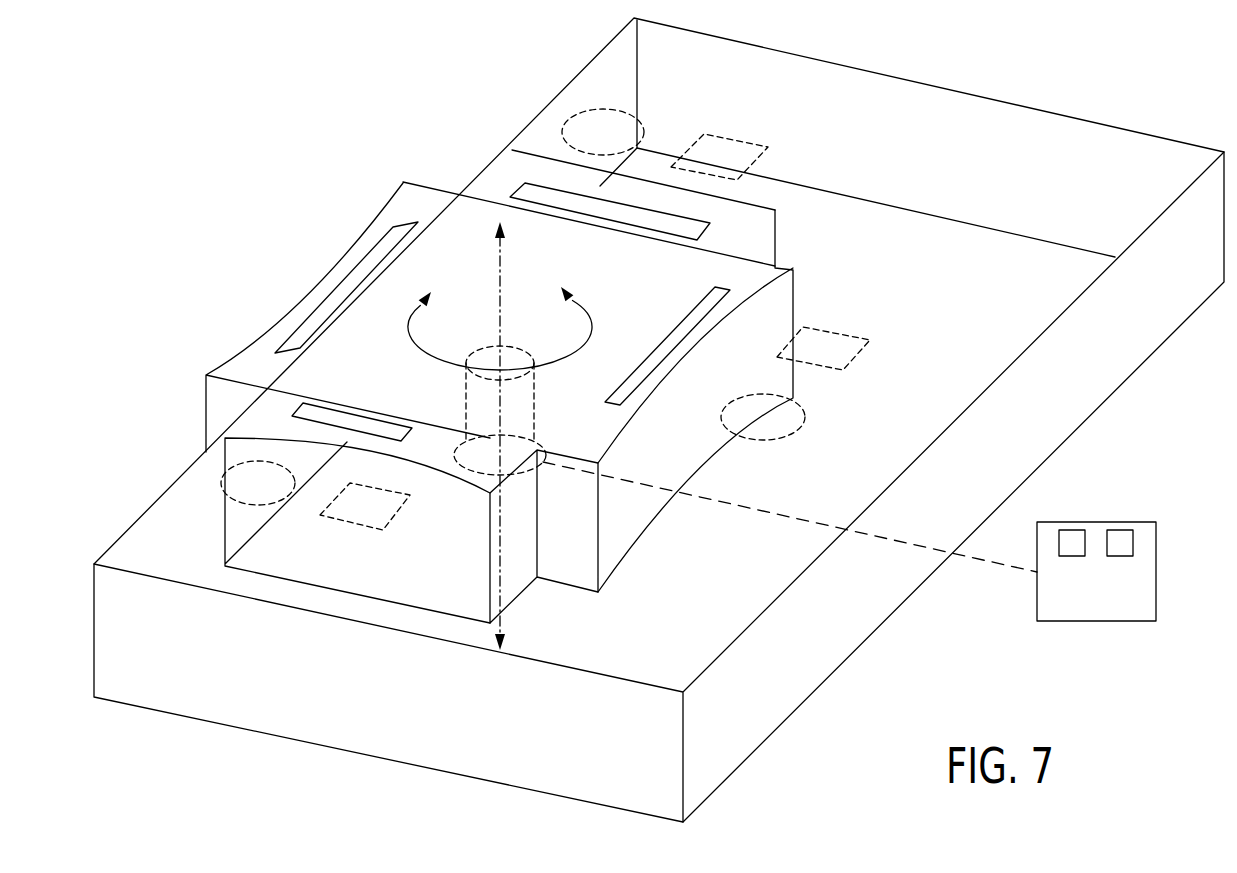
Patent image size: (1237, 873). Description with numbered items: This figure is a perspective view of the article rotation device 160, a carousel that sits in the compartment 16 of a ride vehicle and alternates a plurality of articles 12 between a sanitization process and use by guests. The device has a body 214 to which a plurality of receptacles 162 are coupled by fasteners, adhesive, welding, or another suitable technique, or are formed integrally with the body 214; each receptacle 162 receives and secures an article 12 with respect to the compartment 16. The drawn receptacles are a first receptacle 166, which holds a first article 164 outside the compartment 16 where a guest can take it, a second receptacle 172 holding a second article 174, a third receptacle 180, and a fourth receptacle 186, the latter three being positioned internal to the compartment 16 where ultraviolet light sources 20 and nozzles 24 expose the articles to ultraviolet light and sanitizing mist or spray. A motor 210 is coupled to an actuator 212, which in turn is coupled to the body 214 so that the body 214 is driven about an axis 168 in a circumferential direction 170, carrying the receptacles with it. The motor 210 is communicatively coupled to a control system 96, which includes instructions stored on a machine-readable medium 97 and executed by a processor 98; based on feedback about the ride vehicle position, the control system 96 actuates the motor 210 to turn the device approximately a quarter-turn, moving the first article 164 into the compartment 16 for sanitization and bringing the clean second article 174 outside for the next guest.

The article 12 is at (373, 248).
The compartment 16 is at (932, 84).
The ultraviolet light source 20 is at (222, 482).
The nozzle 24 is at (357, 523).
The control system 96 is at (886, 544).
The machine-readable medium 97 is at (1120, 528).
The processor 98 is at (1073, 528).
The article rotation device 160 is at (472, 135).
The receptacle 162 is at (397, 202).
The first article 164 is at (335, 283).
The first receptacle 166 is at (247, 363).
The axis 168 is at (505, 266).
The circumferential direction 170 is at (584, 300).
The second receptacle 172 is at (740, 210).
The second article 174 is at (640, 153).
The third receptacle 180 is at (653, 493).
The fourth receptacle 186 is at (463, 598).
The motor 210 is at (545, 412).
The actuator 212 is at (466, 394).
The body 214 is at (462, 214).